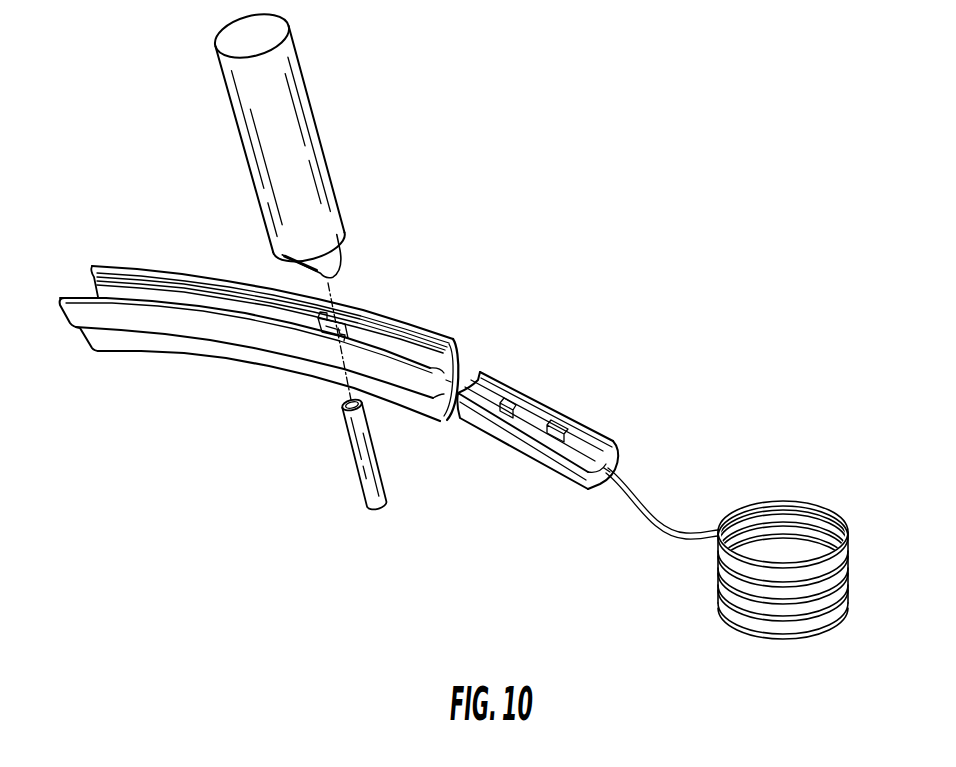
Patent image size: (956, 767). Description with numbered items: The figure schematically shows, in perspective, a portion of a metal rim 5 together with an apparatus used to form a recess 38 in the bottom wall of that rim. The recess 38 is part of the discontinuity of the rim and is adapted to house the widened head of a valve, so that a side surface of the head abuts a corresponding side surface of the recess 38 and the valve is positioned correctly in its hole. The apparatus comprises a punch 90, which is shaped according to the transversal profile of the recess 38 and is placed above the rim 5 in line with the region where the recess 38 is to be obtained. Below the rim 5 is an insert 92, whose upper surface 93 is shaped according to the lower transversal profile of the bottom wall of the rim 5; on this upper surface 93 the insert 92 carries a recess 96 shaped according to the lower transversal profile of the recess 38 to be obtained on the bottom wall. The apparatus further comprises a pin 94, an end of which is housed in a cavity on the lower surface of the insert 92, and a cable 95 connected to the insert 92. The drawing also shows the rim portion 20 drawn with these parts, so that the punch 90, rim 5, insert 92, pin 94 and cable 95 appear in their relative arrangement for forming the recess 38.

The punch 90 is at (290, 127).
The metal rim 5 is at (417, 330).
The frame member 20 is at (250, 368).
The recess 38 is at (339, 320).
The pin 94 is at (363, 467).
The insert 92 is at (565, 401).
The recess 96 is at (535, 413).
The upper surface 93 is at (577, 435).
The cable 95 is at (783, 500).